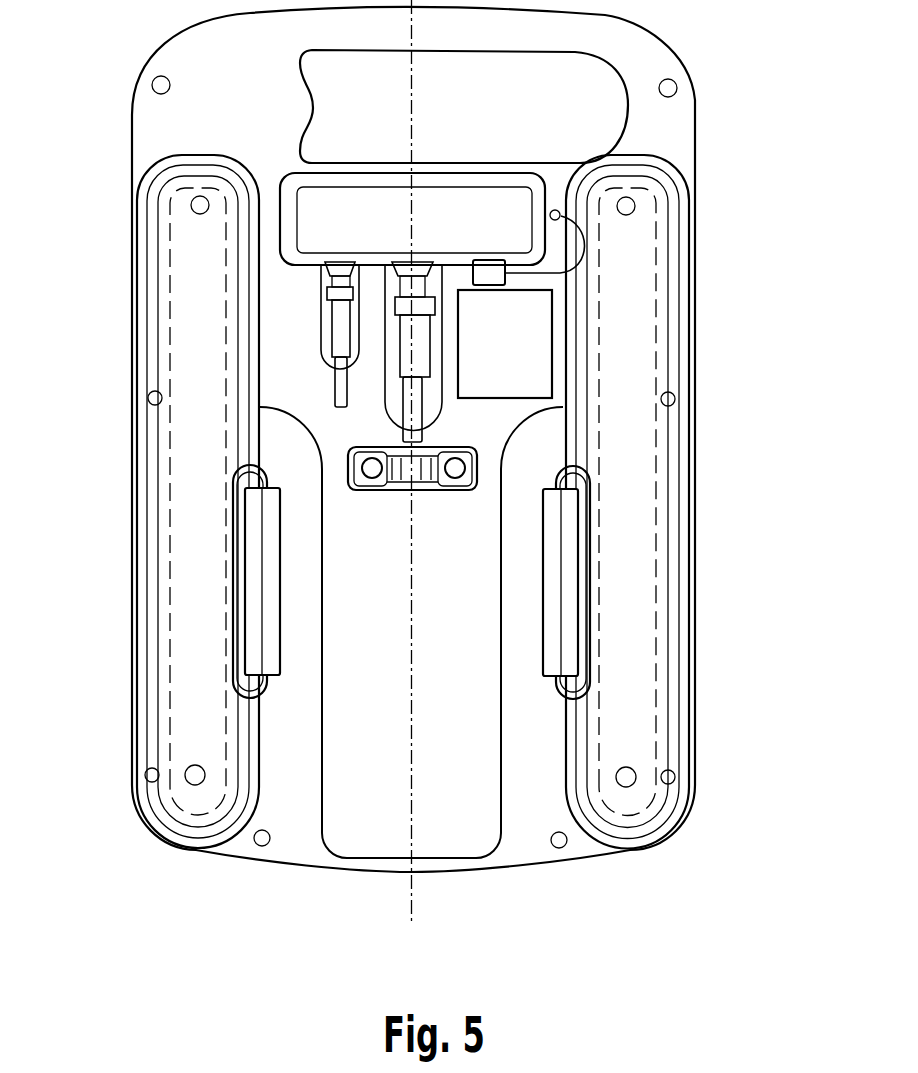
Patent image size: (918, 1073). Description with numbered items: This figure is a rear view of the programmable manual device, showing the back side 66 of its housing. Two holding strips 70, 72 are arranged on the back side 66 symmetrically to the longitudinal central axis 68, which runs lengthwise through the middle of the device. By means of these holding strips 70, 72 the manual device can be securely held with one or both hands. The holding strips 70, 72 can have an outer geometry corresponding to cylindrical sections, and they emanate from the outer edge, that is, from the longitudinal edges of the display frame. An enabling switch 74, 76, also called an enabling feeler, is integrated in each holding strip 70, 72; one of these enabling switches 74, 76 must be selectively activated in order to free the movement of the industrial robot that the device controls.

The back side 66 is at (673, 132).
The longitudinal central axis 68 is at (419, 127).
The holding strip 70 is at (150, 595).
The holding strip 72 is at (670, 602).
The enabling switch 74 is at (268, 600).
The enabling switch 76 is at (550, 600).